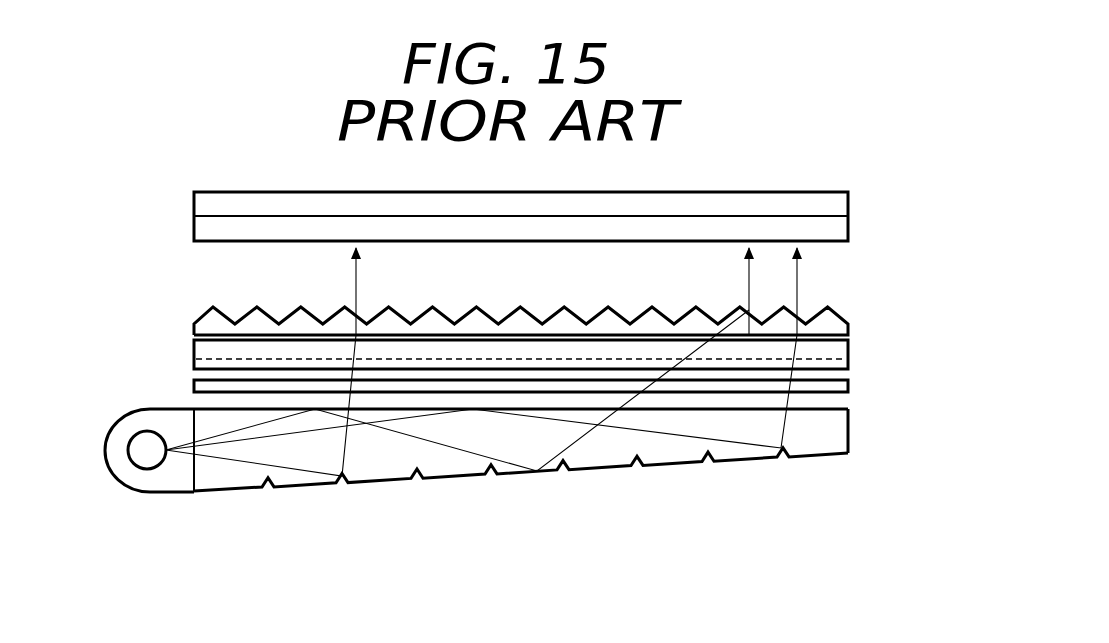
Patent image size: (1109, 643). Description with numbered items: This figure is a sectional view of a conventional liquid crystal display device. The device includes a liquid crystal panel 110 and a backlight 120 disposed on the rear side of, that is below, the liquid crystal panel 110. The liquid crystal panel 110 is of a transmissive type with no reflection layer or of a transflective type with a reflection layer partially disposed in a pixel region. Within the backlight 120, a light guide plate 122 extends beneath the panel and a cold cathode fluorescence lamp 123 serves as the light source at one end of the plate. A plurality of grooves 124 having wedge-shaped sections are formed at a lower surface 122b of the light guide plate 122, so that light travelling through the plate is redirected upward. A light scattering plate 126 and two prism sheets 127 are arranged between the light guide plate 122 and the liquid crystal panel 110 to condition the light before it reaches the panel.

The liquid crystal panel 110 is at (195, 201).
The backlight 120 is at (176, 390).
The light guide plate 122 is at (526, 501).
The lower surface of the light guide plate 122b is at (661, 466).
The cold cathode fluorescence lamp 123 is at (147, 457).
The grooves 124 is at (491, 479).
The light scattering plate 126 is at (843, 387).
The prism sheets 127 is at (843, 352).